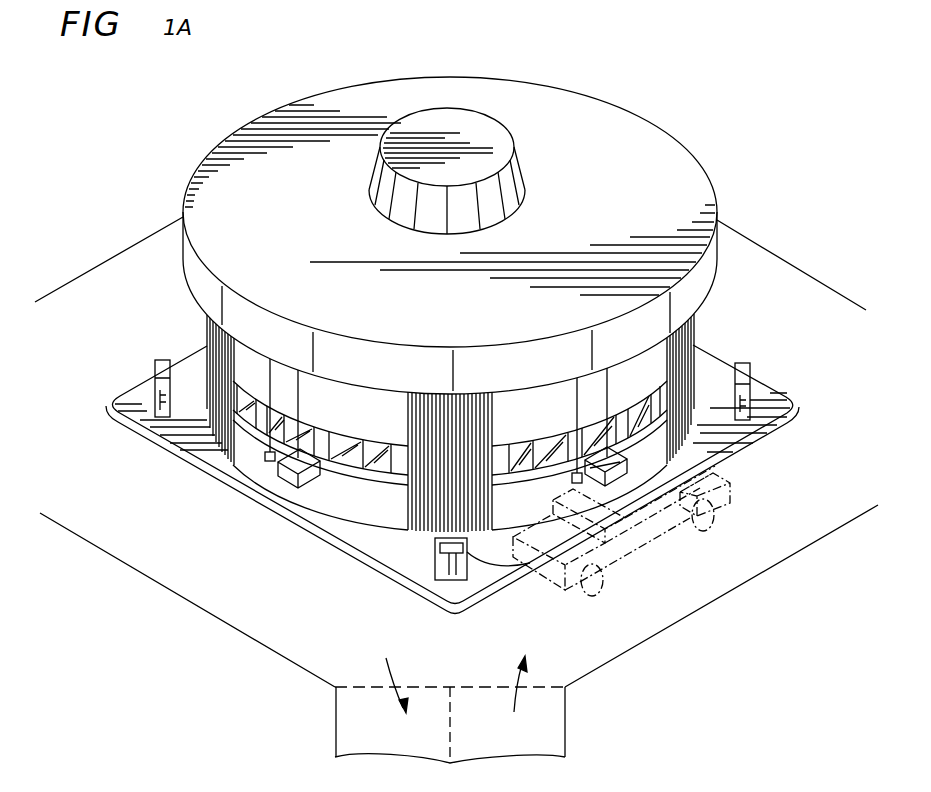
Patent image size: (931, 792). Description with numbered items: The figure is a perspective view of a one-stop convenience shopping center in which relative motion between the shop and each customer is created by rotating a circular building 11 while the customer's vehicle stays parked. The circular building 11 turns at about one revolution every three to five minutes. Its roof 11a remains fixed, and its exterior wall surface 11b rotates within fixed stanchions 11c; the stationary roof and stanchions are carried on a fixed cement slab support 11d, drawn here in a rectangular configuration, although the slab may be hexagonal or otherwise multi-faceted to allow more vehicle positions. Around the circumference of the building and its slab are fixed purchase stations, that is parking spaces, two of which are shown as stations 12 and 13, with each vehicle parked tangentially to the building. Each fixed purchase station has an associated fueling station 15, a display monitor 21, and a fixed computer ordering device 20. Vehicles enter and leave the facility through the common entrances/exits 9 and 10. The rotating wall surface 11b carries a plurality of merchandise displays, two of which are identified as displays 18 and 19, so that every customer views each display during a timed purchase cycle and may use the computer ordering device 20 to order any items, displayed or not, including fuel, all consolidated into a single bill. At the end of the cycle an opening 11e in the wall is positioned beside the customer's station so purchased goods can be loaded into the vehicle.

The common entrance/exit 9 is at (461, 786).
The common entrance/exit 10 is at (80, 420).
The circular building 11 is at (180, 315).
The roof 11a is at (631, 119).
The exterior wall surface 11b is at (260, 372).
The stanchions 11c is at (213, 428).
The cement slab support 11d is at (423, 583).
The opening 11e is at (390, 506).
The fixed purchase station 12 is at (590, 641).
The fixed purchase station 13 is at (270, 594).
The fueling station 15 is at (453, 568).
The merchandise display 18 is at (348, 448).
The merchandise display 19 is at (510, 450).
The computer ordering device 20 is at (265, 457).
The display monitor 21 is at (300, 478).